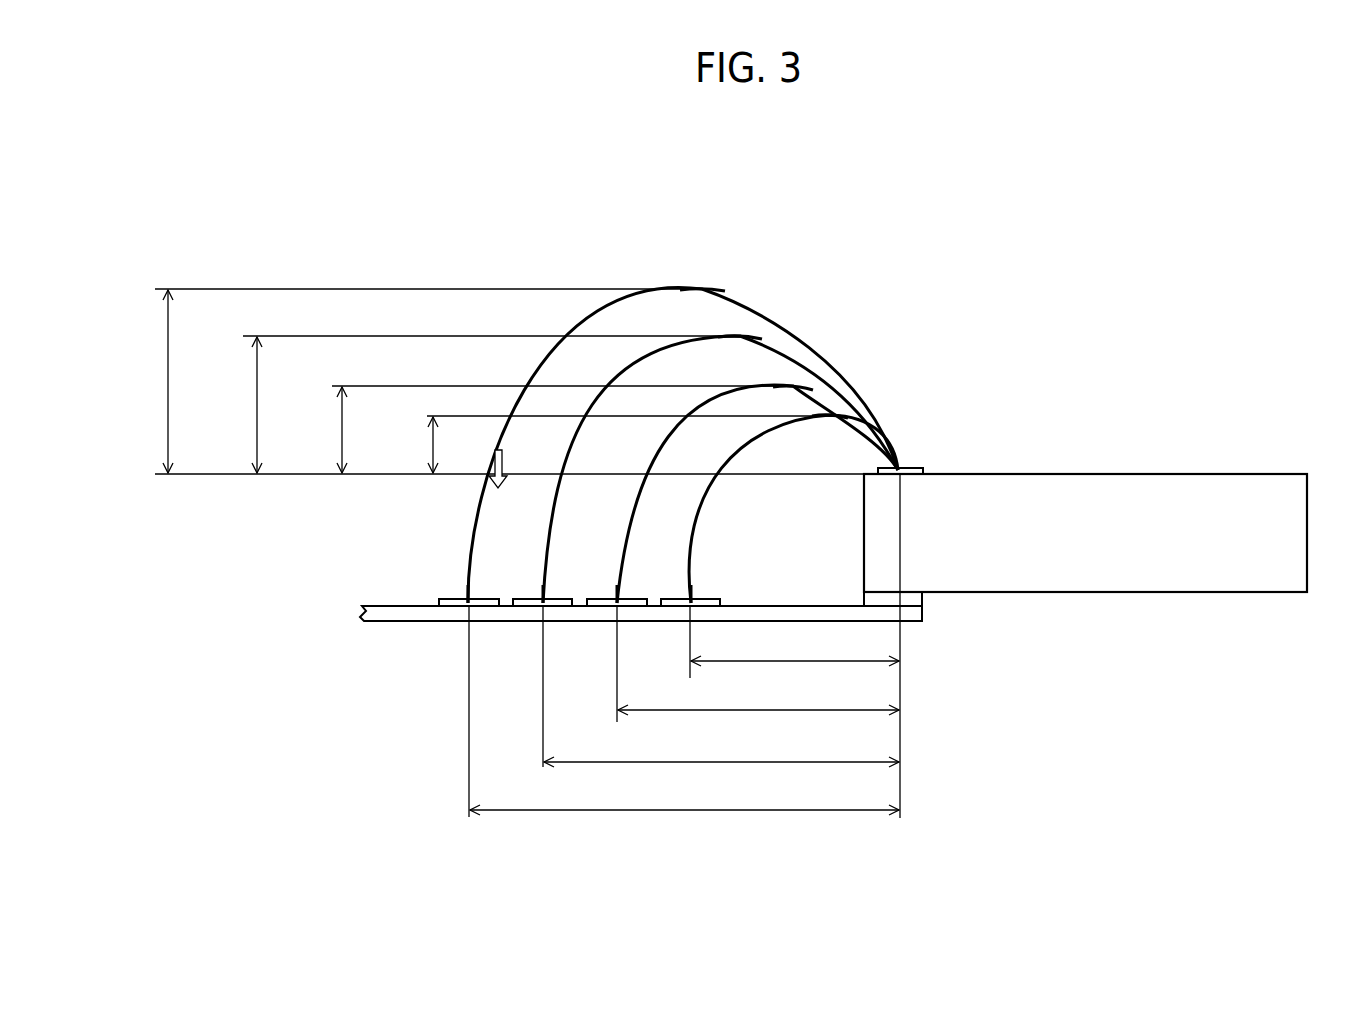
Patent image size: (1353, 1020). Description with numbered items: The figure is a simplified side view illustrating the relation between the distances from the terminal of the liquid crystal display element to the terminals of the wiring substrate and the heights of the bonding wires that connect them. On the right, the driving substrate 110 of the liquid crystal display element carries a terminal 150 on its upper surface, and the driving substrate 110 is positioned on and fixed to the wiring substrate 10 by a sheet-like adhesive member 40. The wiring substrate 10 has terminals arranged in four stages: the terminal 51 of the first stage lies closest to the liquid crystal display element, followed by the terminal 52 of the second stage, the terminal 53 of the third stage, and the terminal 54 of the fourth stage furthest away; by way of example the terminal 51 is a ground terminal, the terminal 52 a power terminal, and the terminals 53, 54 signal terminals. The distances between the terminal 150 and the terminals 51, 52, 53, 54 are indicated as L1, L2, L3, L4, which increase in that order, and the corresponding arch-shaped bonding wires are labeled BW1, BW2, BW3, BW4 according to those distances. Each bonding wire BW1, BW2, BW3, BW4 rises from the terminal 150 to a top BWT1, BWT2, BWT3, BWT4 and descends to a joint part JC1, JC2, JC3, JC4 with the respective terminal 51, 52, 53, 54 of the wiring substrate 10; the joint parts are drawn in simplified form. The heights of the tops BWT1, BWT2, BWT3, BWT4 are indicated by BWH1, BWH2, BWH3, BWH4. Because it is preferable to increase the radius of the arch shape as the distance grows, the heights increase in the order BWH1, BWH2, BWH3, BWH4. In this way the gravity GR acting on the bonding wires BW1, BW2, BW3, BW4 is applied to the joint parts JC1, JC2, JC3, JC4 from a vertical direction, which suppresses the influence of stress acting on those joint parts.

The driving substrate 110 is at (1197, 480).
The terminal 150 is at (907, 466).
The adhesive member 40 is at (922, 598).
The wiring substrate 10 is at (922, 612).
The terminal 51 is at (673, 607).
The terminal 52 is at (600, 607).
The terminal 53 is at (525, 607).
The terminal 54 is at (452, 607).
The bonding wire BW1 is at (748, 442).
The bonding wire BW2 is at (640, 490).
The bonding wire BW3 is at (643, 373).
The bonding wire BW4 is at (628, 305).
The top of bonding wire BWT1 is at (828, 413).
The top of bonding wire BWT2 is at (803, 385).
The top of bonding wire BWT3 is at (758, 338).
The top of bonding wire BWT4 is at (715, 288).
The height of bonding wire BWH1 is at (594, 444).
The height of bonding wire BWH2 is at (530, 429).
The height of bonding wire BWH3 is at (462, 404).
The height of bonding wire BWH4 is at (400, 381).
The joint part JC1 is at (691, 599).
The joint part JC2 is at (617, 599).
The joint part JC3 is at (543, 599).
The joint part JC4 is at (468, 599).
The gravity GR is at (502, 485).
The distance L1 is at (794, 642).
The distance L2 is at (758, 664).
The distance L3 is at (721, 686).
The distance L4 is at (684, 711).